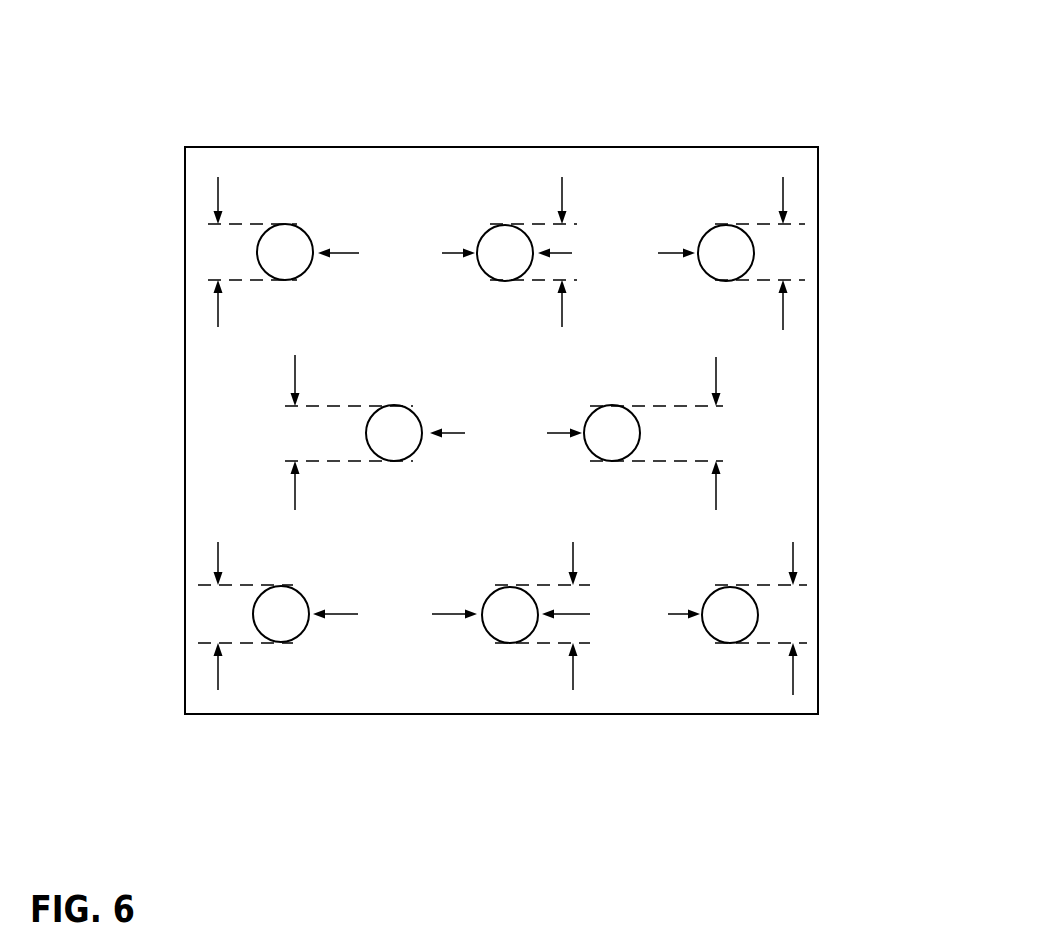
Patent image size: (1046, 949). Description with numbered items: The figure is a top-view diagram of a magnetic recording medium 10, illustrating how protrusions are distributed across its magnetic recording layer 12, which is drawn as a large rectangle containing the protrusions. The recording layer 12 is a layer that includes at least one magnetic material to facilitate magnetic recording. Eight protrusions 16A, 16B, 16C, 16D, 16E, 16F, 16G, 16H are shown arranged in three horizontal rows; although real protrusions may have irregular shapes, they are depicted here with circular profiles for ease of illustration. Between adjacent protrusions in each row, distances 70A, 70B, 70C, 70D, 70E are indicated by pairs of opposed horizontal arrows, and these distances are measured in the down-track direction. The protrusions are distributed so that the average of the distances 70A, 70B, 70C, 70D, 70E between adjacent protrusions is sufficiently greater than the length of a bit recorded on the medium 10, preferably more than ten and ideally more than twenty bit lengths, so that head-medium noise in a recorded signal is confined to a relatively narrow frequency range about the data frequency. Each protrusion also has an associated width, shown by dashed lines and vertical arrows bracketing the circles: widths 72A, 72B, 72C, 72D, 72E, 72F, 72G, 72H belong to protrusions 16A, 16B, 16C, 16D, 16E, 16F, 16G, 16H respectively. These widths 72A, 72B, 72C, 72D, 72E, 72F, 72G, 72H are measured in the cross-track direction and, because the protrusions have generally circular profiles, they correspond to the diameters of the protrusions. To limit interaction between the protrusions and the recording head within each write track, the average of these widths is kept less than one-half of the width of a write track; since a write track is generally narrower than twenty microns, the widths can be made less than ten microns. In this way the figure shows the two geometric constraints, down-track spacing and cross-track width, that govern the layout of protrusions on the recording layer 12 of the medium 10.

The magnetic recording medium 10 is at (173, 112).
The magnetic recording layer 12 is at (640, 178).
The protrusion 16A is at (259, 627).
The protrusion 16B is at (488, 628).
The protrusion 16C is at (708, 628).
The protrusion 16D is at (372, 446).
The protrusion 16E is at (590, 446).
The protrusion 16F is at (263, 265).
The protrusion 16G is at (483, 266).
The protrusion 16H is at (704, 266).
The distance between adjacent protrusions 70A is at (395, 615).
The distance between adjacent protrusions 70B is at (621, 615).
The distance between adjacent protrusions 70C is at (506, 434).
The distance between adjacent protrusions 70D is at (396, 254).
The distance between adjacent protrusions 70E is at (616, 254).
The width of protrusion 72A is at (196, 617).
The width of protrusion 72B is at (594, 633).
The width of protrusion 72C is at (805, 614).
The width of protrusion 72D is at (280, 434).
The width of protrusion 72E is at (719, 433).
The width of protrusion 72F is at (205, 253).
The width of protrusion 72G is at (564, 270).
The width of protrusion 72H is at (806, 258).